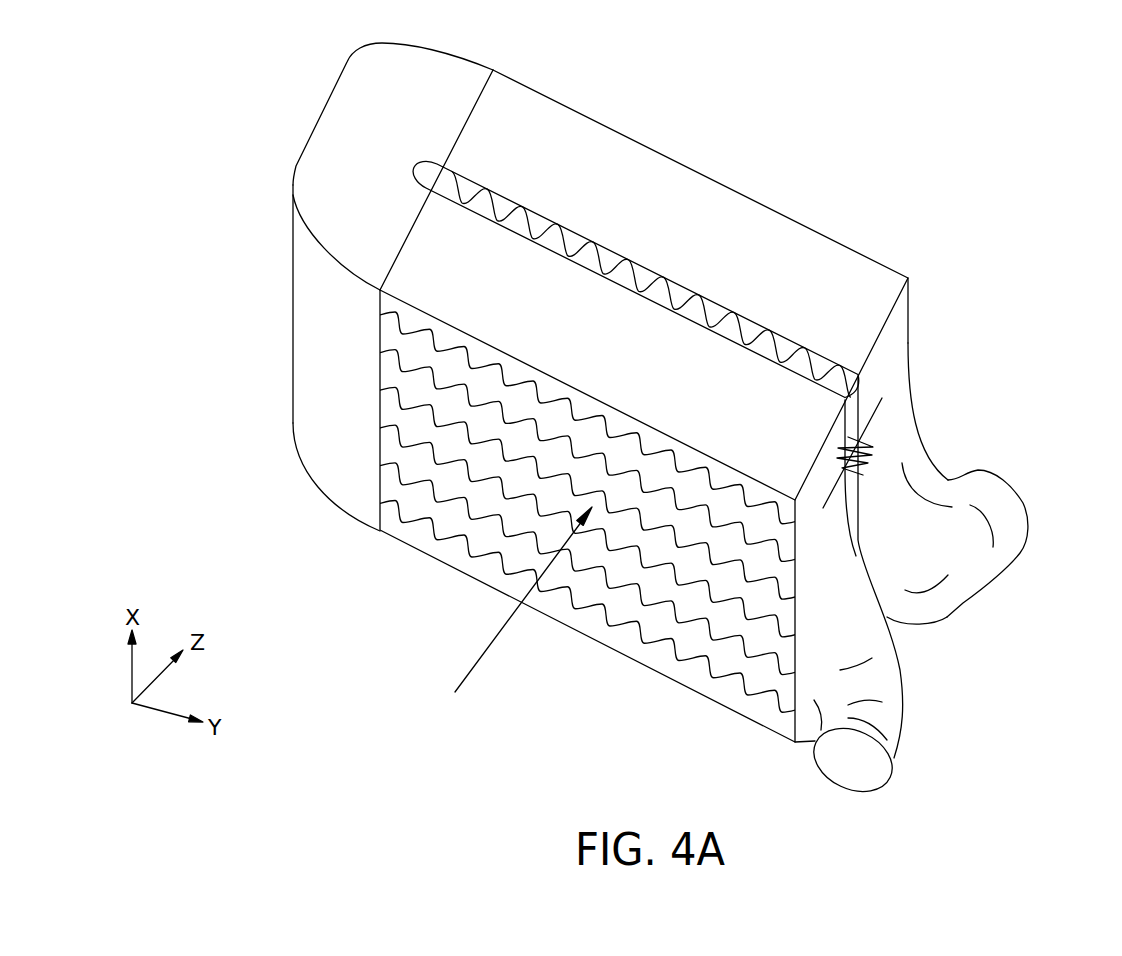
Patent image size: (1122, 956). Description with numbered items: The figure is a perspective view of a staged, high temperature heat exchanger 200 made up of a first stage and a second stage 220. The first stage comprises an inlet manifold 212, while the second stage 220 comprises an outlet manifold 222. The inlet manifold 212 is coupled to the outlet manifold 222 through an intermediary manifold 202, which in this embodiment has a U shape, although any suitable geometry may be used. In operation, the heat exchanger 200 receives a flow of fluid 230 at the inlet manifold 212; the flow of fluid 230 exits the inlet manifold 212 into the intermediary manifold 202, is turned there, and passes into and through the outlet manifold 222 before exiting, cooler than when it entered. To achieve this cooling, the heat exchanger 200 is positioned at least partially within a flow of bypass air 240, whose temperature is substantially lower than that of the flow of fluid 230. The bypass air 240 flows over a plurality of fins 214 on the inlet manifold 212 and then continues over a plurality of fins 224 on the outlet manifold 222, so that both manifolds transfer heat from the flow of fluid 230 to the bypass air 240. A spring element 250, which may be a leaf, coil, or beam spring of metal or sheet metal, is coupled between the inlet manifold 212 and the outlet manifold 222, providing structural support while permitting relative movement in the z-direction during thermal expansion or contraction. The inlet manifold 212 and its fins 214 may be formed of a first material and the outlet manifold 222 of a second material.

The staged high temperature heat exchanger 200 is at (701, 445).
The intermediary manifold 202 is at (380, 144).
The inlet manifold 212 is at (636, 362).
The plurality of fins 214 is at (500, 493).
The second stage 220 is at (905, 352).
The outlet manifold 222 is at (707, 226).
The plurality of fins 224 is at (543, 222).
The flow of fluid 230 is at (1098, 443).
The bypass air 240 is at (475, 668).
The spring element 250 is at (863, 476).